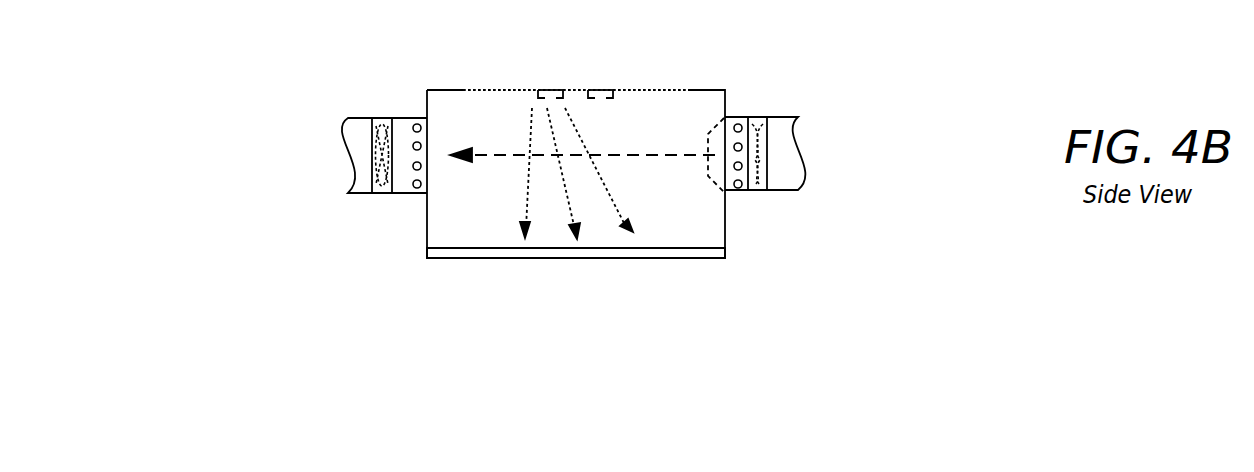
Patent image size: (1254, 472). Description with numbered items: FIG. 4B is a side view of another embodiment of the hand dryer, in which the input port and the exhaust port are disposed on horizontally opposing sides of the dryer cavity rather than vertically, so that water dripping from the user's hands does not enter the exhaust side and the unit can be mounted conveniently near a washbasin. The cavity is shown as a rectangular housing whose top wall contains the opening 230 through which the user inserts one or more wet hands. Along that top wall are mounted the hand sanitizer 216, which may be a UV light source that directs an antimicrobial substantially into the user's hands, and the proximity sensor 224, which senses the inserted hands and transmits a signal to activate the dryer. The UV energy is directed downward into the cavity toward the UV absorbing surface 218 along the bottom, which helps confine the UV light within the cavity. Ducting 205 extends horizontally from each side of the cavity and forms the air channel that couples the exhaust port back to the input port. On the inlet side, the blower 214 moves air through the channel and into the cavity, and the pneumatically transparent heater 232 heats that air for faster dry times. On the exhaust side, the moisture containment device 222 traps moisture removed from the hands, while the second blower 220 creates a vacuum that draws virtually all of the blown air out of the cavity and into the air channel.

The ducting 205 is at (358, 117).
The blower 214 is at (760, 192).
The hand sanitizer 216 is at (545, 87).
The UV absorbing surface 218 is at (660, 258).
The second blower 220 is at (380, 195).
The moisture containment device 222 is at (413, 192).
The proximity sensor 224 is at (603, 83).
The opening 230 is at (573, 83).
The pneumatically transparent heater 232 is at (736, 192).